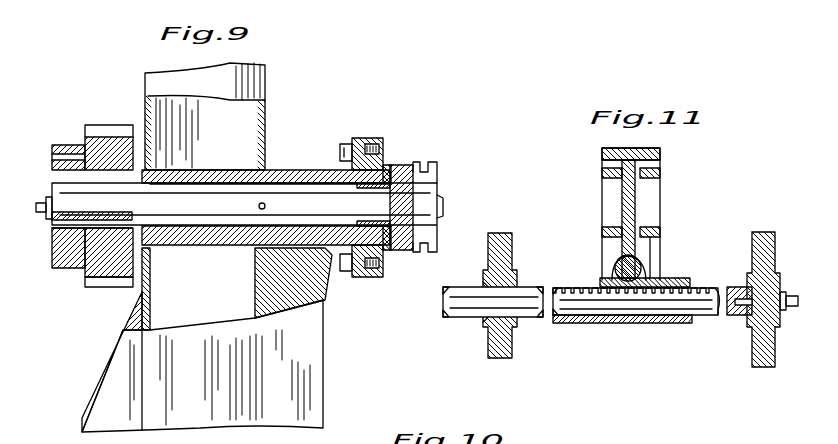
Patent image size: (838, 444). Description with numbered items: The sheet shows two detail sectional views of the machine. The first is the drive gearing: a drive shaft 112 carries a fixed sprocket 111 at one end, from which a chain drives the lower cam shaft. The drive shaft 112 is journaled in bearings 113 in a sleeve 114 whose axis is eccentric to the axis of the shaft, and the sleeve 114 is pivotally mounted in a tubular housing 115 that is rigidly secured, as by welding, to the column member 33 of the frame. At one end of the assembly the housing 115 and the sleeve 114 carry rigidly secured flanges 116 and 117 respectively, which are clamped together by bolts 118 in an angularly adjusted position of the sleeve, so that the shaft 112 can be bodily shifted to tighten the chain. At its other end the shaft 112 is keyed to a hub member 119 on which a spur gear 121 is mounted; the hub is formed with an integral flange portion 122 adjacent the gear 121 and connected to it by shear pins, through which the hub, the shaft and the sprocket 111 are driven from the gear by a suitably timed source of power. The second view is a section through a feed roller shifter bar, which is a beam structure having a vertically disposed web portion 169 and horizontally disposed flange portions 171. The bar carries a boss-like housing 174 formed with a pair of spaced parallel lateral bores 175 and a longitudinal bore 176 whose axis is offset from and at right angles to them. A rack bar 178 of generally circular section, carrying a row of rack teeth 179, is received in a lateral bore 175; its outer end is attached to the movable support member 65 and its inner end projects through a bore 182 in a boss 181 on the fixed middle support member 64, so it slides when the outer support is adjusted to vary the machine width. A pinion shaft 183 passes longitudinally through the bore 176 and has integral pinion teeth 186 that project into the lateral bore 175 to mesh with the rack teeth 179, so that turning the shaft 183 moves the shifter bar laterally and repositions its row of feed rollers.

In FIG. 9, the column member 33 is at (235, 355).
In FIG. 9, the sprocket 111 is at (432, 174).
In FIG. 9, the drive shaft 112 is at (440, 207).
In FIG. 9, the bearings 113 is at (380, 190).
In FIG. 9, the sleeve 114 is at (313, 176).
In FIG. 9, the tubular housing 115 is at (284, 170).
In FIG. 9, the flange 116 is at (366, 278).
In FIG. 9, the flange 117 is at (388, 160).
In FIG. 9, the bolts 118 is at (350, 138).
In FIG. 9, the hub member 119 is at (100, 186).
In FIG. 9, the spur gear 121 is at (100, 262).
In FIG. 9, the flange portion 122 is at (62, 262).
In FIG. 11, the fixed support member 64 is at (512, 253).
In FIG. 11, the movable support member 65 is at (757, 350).
In FIG. 11, the web portion 169 is at (635, 208).
In FIG. 11, the flange portion 171 is at (662, 174).
In FIG. 11, the housing 174 is at (650, 279).
In FIG. 11, the bore 175 is at (655, 323).
In FIG. 11, the longitudinal bore 176 is at (652, 274).
In FIG. 11, the rack bar 178 is at (585, 305).
In FIG. 11, the rack teeth 179 is at (712, 288).
In FIG. 11, the boss 181 is at (488, 282).
In FIG. 11, the bore 182 is at (500, 330).
In FIG. 11, the pinion shaft 183 is at (616, 322).
In FIG. 11, the pinion teeth 186 is at (606, 262).